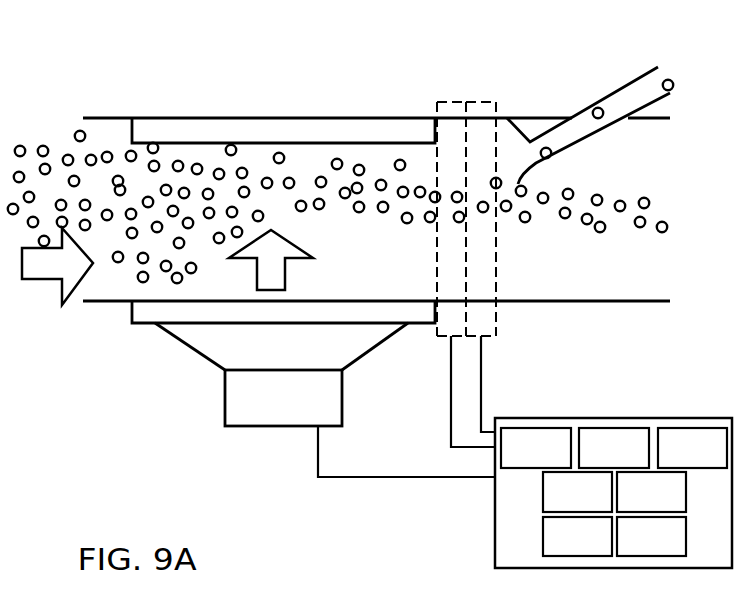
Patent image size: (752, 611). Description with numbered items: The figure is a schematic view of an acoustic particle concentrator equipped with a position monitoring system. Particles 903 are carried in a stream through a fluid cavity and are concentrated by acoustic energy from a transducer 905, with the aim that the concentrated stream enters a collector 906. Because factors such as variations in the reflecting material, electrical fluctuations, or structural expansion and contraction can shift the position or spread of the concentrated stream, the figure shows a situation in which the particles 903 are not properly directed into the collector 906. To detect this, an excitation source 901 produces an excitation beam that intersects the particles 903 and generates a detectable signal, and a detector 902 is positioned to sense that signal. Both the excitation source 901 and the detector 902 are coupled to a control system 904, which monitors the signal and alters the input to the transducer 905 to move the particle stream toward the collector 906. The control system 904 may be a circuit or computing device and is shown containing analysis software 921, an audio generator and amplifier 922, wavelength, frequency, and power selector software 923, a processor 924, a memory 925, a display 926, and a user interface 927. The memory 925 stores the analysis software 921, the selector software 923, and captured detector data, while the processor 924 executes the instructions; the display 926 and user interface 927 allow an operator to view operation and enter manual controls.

The excitation source 901 is at (452, 99).
The detector 902 is at (482, 99).
The particles 903 is at (378, 185).
The control system 904 is at (613, 456).
The transducer 905 is at (224, 417).
The collector 906 is at (618, 90).
The analysis software 921 is at (536, 448).
The audio generator and amplifier 922 is at (614, 448).
The wavelength, frequency, and power selector software 923 is at (692, 448).
The processor 924 is at (577, 492).
The memory 925 is at (651, 492).
The display 926 is at (577, 536).
The user interface 927 is at (651, 536).